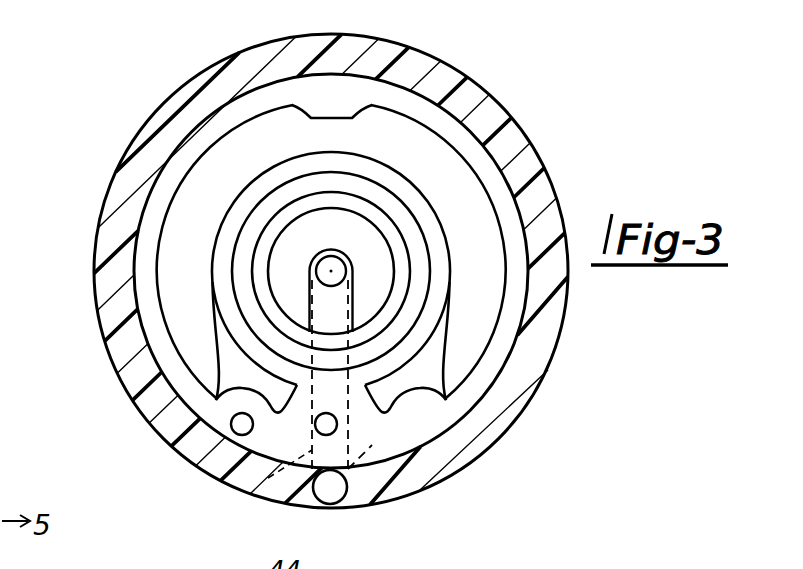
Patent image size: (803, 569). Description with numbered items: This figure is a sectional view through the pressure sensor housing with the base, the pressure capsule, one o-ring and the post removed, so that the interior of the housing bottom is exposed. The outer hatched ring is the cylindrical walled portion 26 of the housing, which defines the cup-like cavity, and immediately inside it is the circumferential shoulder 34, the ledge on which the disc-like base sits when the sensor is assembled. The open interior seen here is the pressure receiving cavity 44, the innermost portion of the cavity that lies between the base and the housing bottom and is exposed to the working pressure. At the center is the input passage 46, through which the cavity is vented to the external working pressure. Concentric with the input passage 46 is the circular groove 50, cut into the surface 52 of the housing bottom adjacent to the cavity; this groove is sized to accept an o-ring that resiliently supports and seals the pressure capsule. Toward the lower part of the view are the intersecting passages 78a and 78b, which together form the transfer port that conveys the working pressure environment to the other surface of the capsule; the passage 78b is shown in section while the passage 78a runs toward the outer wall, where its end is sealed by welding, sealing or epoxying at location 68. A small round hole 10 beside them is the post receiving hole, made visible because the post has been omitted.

The locating hole 10 is at (241, 430).
The walled portion 26 is at (100, 256).
The circumferential shoulder 34 is at (175, 165).
The pressure receiving cavity 44 is at (372, 284).
The input passage 46 is at (343, 262).
The circular groove 50 is at (237, 268).
The surface 52 is at (290, 324).
The sealing locations 68 is at (330, 502).
The passage 78a is at (268, 480).
The passage 78b is at (338, 424).